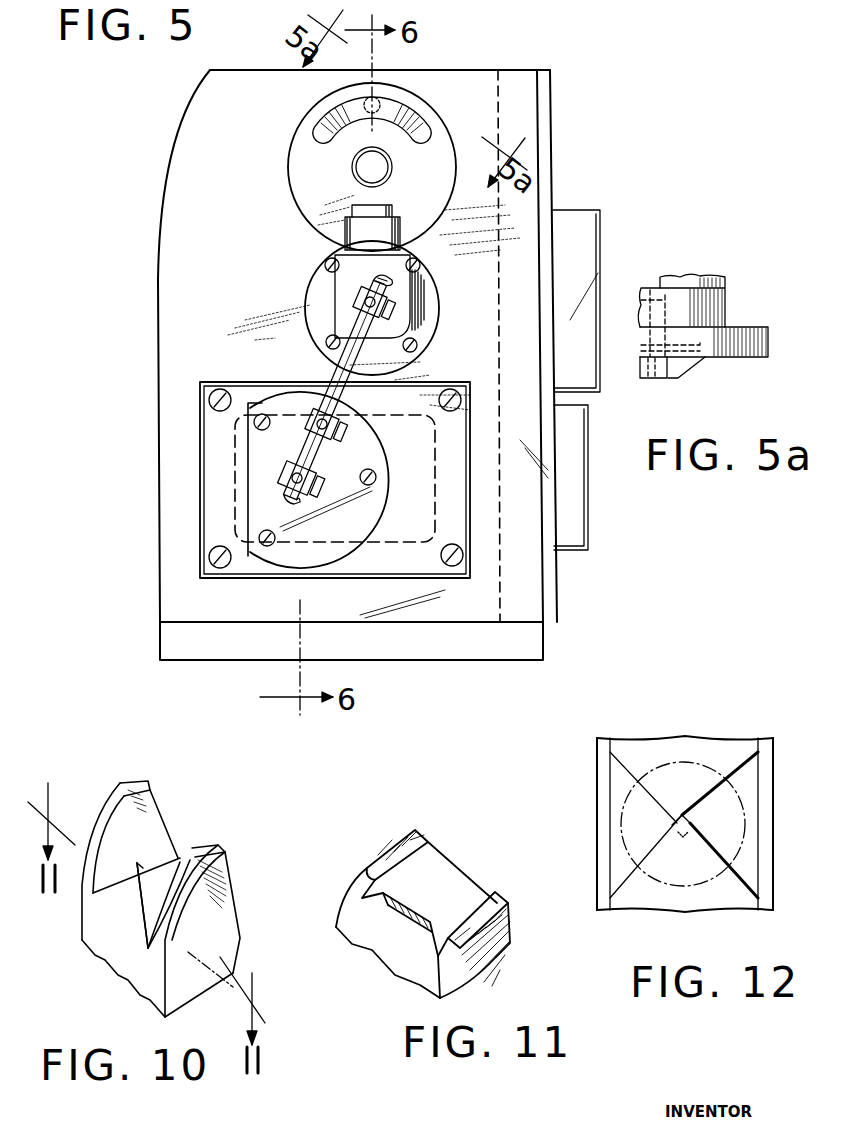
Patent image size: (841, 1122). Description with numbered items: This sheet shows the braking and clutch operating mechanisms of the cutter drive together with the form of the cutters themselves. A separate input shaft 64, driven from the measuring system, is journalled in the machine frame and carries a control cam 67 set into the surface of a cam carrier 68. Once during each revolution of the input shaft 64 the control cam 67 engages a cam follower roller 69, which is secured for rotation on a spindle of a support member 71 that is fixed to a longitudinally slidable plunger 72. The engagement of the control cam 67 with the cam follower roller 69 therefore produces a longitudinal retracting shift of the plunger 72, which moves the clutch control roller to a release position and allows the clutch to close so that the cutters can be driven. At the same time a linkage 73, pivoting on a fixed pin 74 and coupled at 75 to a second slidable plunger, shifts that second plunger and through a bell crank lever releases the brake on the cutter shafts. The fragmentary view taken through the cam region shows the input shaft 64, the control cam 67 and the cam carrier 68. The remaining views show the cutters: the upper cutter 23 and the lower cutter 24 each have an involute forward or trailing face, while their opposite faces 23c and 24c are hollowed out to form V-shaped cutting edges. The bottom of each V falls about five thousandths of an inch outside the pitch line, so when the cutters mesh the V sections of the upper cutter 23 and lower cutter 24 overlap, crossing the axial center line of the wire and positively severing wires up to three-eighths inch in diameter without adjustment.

In FIG. 12, the upper cutter 23 is at (733, 755).
In FIG. 12, the opposite face of upper cutter 23c is at (650, 800).
In FIG. 10, the lower cutter 24 is at (192, 899).
In FIG. 11, the lower cutter 24 is at (475, 958).
In FIG. 12, the lower cutter 24 is at (638, 893).
In FIG. 10, the opposite face of lower cutter 24c is at (137, 840).
In FIG. 12, the opposite face of lower cutter 24c is at (657, 847).
In FIG. 5, the separate input shaft 64 is at (380, 165).
In FIG. 5A, the separate input shaft 64 is at (707, 282).
In FIG. 5, the control cam 67 is at (393, 108).
In FIG. 5A, the control cam 67 is at (672, 372).
In FIG. 5, the cam carrier 68 is at (447, 160).
In FIG. 5A, the cam carrier 68 is at (767, 335).
In FIG. 5, the cam follower roller 69 is at (402, 228).
In FIG. 5, the support member 71 is at (398, 297).
In FIG. 5, the longitudinally slidable plunger 72 is at (348, 305).
In FIG. 5, the linkage 73 is at (333, 377).
In FIG. 5, the fixed pin 74 is at (332, 432).
In FIG. 5, the coupling point 75 is at (318, 493).